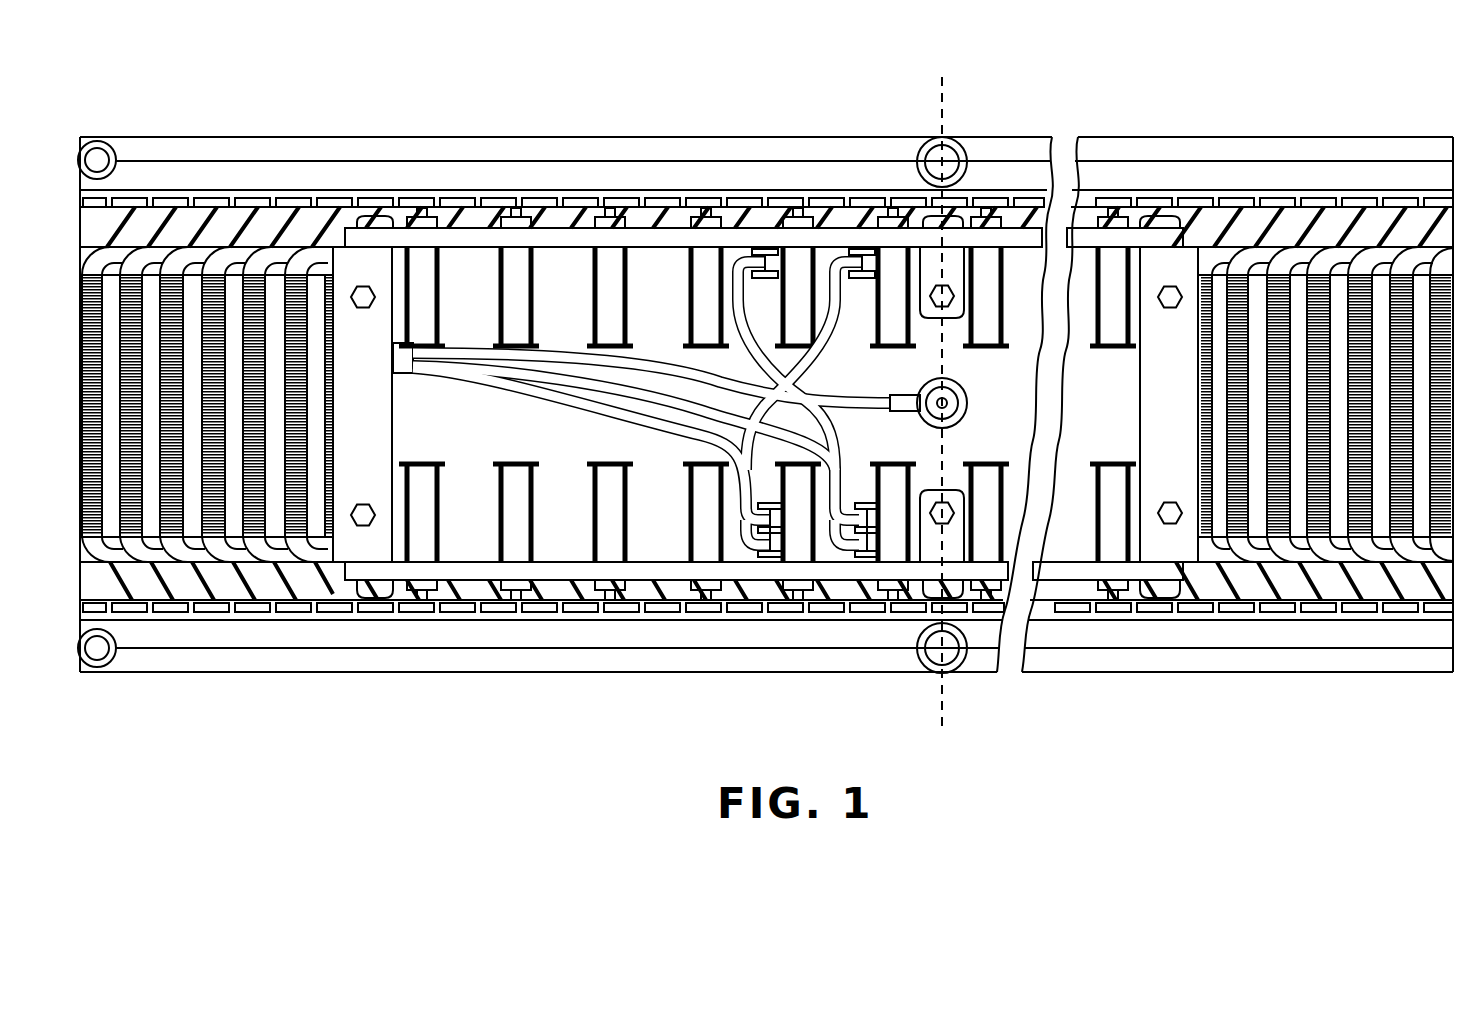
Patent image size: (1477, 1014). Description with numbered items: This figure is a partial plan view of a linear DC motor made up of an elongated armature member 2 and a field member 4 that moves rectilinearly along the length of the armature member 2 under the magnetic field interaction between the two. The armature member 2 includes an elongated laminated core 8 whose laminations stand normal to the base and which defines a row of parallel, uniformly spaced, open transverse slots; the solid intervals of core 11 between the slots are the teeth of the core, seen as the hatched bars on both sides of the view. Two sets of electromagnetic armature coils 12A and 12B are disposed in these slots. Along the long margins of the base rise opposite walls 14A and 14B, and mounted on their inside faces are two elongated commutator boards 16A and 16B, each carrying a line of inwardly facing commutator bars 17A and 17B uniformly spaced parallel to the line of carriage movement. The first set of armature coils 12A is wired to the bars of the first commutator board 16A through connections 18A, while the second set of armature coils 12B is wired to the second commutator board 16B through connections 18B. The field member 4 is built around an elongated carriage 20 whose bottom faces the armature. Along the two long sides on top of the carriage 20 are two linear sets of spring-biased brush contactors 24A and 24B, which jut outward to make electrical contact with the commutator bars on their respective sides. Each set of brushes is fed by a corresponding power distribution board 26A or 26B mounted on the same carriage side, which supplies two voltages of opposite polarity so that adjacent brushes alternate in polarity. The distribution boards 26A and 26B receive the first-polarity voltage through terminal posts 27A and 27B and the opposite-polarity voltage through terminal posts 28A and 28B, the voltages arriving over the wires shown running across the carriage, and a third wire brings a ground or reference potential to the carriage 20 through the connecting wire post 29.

The armature member 2 is at (203, 122).
The field member 4 is at (1187, 263).
The elongated laminated core 8 is at (330, 240).
The solid intervals of core 11 is at (137, 287).
The first set of armature coils 12A is at (250, 255).
The second set of armature coils 12B is at (300, 265).
The wall 14A is at (555, 137).
The wall 14B is at (633, 673).
The first commutator board 16A is at (425, 190).
The second commutator board 16B is at (500, 622).
The commutator bars 17A is at (752, 198).
The commutator bars 17B is at (373, 608).
The connections 18A is at (683, 218).
The connections 18B is at (297, 582).
The carriage 20 is at (490, 421).
The brush contactors 24A is at (608, 210).
The brush contactors 24B is at (803, 605).
The power distribution board 26A is at (1035, 240).
The power distribution board 26B is at (1123, 575).
The terminal post 27A is at (760, 292).
The terminal post 27B is at (850, 500).
The terminal post 28A is at (853, 287).
The terminal post 28B is at (760, 492).
The connecting wire post 29 is at (970, 410).